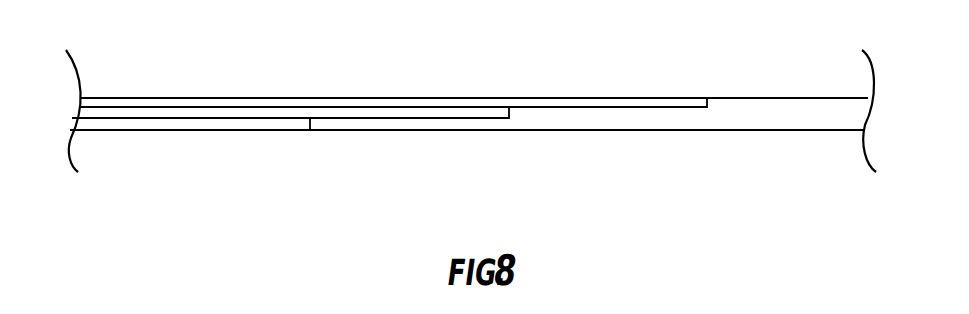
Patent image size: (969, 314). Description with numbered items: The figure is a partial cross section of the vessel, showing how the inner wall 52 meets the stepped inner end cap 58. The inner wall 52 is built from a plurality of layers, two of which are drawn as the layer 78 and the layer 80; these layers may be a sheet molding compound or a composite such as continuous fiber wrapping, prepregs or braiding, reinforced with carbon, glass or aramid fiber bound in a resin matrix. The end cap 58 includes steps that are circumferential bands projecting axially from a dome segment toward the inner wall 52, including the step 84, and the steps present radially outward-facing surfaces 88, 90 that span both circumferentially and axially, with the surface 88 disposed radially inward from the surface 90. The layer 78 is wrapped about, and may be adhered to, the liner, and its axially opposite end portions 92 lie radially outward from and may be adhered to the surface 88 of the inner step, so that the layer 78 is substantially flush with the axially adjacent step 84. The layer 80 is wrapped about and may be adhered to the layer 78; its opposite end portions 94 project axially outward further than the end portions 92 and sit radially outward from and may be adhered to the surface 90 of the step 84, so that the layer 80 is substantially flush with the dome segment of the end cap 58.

The inner wall 52 is at (196, 94).
The inner end cap 58 is at (760, 94).
The layer 78 is at (258, 112).
The layer 80 is at (328, 102).
The step 84 is at (555, 115).
The surface 88 is at (387, 116).
The surface 90 is at (528, 105).
The end portion 92 is at (437, 113).
The end portion 94 is at (630, 102).